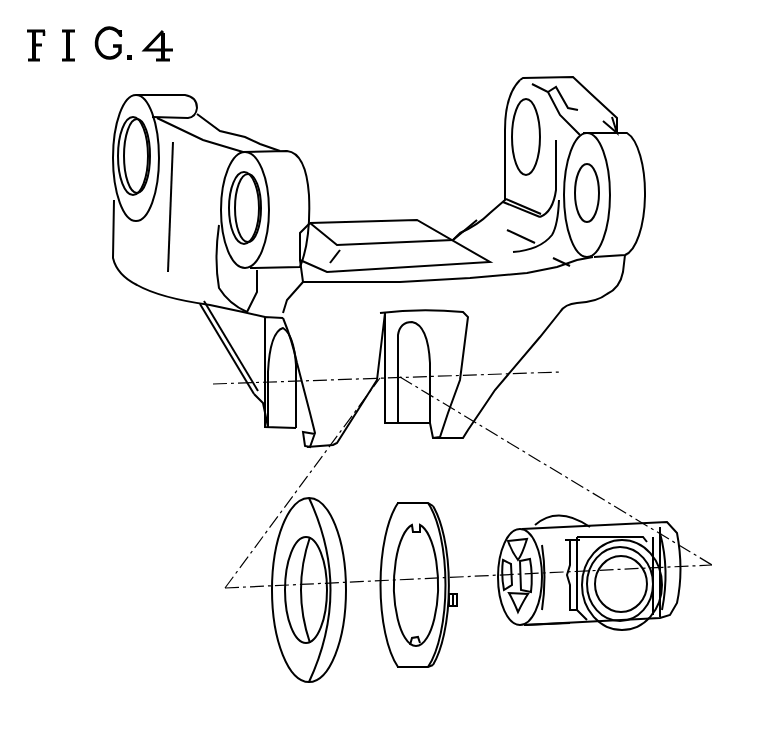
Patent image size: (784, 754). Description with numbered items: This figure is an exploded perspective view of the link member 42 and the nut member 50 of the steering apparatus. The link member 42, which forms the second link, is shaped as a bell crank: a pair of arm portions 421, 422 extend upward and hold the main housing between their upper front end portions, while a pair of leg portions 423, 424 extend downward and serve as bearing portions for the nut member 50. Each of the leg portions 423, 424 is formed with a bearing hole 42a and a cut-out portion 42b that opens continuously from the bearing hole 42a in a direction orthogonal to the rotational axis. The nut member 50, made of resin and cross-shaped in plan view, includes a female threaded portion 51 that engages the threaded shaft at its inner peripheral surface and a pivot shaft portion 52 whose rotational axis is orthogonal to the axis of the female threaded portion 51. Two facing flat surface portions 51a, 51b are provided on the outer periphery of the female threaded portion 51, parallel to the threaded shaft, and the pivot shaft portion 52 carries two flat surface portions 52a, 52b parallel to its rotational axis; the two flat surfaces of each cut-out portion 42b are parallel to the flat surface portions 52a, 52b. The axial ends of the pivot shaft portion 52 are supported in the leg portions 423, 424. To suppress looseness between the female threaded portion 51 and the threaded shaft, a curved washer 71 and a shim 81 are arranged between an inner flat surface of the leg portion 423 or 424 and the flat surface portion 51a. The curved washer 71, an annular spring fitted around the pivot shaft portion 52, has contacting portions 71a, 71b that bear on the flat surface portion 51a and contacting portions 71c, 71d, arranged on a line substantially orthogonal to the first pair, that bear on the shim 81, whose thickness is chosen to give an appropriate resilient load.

The link member 42 is at (622, 101).
The arm portion 421 is at (187, 240).
The arm portion 422 is at (635, 188).
The leg portion 423 is at (250, 351).
The leg portion 424 is at (513, 352).
The bearing hole 42a is at (278, 358).
The cut-out portion 42b is at (282, 413).
The nut member 50 is at (654, 504).
The female threaded portion 51 is at (645, 622).
The flat surface portion 51a is at (575, 612).
The flat surface portion 51b is at (662, 598).
The pivot shaft portion 52 is at (678, 545).
The flat surface portion 52a is at (540, 523).
The flat surface portion 52b is at (543, 627).
The curved washer 71 is at (392, 640).
The contacting portion 71a is at (448, 602).
The contacting portion 71b is at (392, 548).
The contacting portion 71c is at (407, 503).
The contacting portion 71d is at (413, 670).
The shim 81 is at (307, 668).